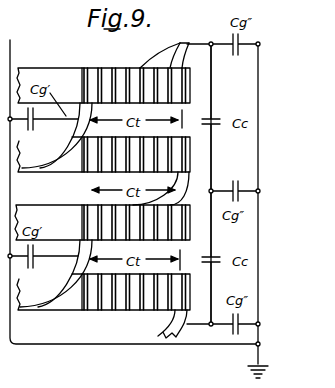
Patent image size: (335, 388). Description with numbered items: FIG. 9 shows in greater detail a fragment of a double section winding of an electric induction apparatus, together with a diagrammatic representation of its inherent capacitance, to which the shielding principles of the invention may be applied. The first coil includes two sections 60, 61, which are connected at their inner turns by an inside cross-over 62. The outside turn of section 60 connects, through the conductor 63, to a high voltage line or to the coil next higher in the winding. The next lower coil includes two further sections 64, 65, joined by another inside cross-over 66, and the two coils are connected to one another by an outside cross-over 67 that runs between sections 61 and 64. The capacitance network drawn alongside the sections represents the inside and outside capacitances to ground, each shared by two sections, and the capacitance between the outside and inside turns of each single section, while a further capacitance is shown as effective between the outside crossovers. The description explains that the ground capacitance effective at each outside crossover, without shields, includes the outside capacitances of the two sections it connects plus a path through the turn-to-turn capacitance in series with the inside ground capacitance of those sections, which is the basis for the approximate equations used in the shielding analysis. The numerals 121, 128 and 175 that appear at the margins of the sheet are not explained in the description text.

The section 60 is at (190, 88).
The section 61 is at (190, 158).
The inside cross-over 62 is at (74, 114).
The conductor 63 is at (182, 47).
The section 64 is at (190, 230).
The section 65 is at (190, 292).
The inside cross-over 66 is at (93, 254).
The outside cross-over 67 is at (183, 192).
The lead 121 is at (0, 381).
The lead 128 is at (0, 8).
The lead 175 is at (0, 22).